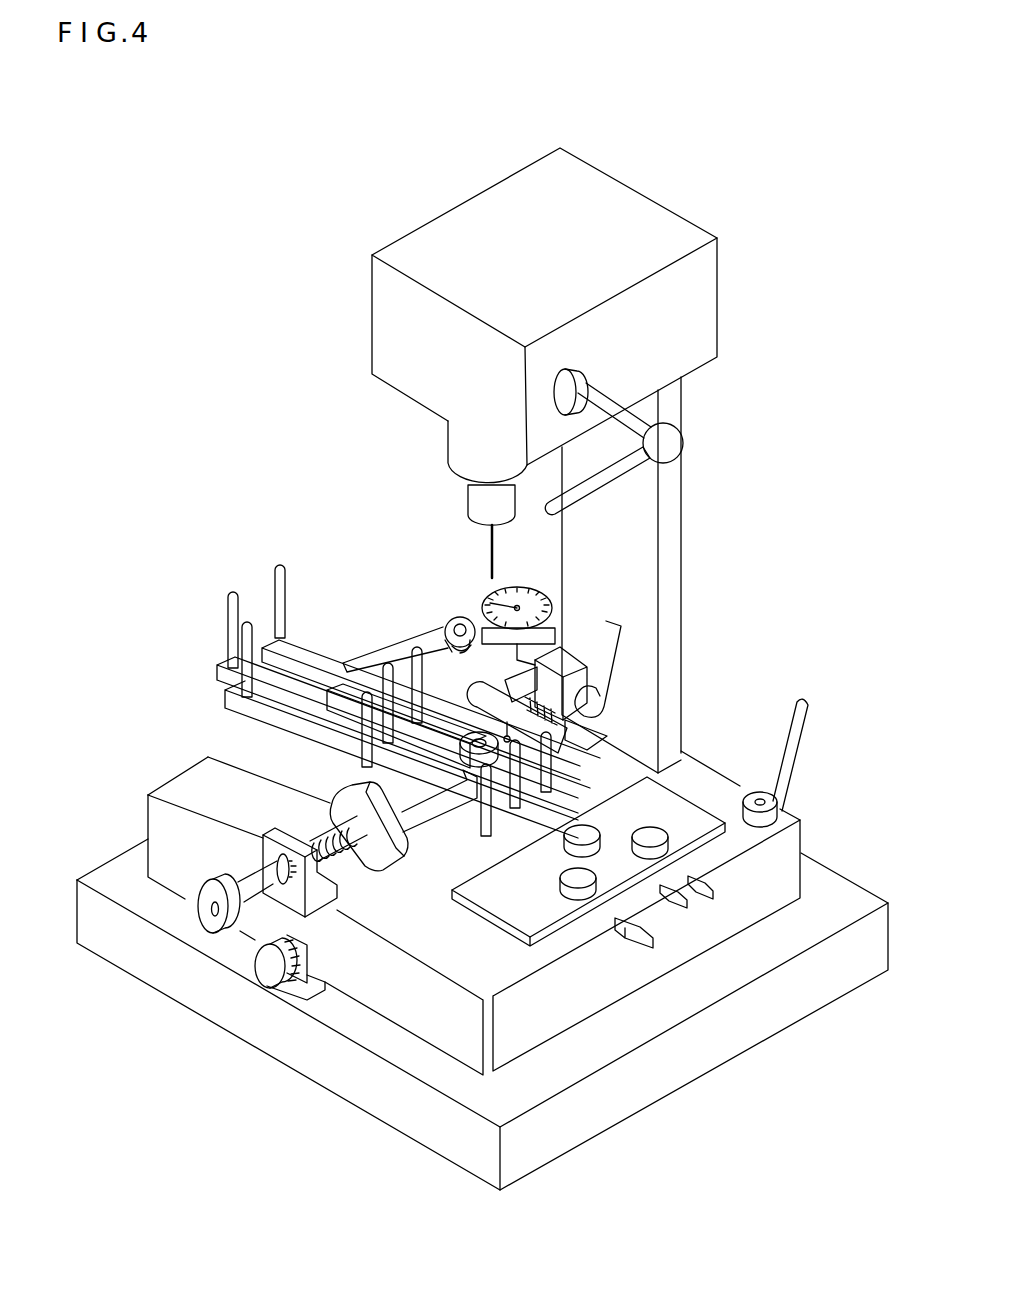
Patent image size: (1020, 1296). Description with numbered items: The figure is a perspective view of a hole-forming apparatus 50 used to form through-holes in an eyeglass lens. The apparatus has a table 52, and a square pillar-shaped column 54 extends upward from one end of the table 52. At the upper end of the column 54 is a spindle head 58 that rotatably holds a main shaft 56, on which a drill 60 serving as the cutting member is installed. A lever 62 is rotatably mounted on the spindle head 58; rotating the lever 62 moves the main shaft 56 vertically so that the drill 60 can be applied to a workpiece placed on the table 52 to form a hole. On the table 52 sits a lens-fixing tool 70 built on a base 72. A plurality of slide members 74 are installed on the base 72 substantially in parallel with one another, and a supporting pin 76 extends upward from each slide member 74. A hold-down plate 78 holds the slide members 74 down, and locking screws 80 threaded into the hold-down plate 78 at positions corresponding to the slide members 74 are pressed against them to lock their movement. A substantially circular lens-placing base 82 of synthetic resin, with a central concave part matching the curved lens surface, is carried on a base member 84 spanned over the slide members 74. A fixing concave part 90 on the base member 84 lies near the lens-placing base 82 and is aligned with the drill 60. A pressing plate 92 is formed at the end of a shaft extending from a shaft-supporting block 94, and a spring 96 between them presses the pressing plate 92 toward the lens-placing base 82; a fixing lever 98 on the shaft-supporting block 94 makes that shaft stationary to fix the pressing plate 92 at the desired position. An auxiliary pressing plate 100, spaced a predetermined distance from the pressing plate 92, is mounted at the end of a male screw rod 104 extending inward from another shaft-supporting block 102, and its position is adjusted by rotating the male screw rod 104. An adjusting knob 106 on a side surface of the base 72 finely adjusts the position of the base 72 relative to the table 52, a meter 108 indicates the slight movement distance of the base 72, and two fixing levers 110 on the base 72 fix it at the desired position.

The hole-forming apparatus 50 is at (283, 112).
The table 52 is at (680, 1063).
The column 54 is at (645, 518).
The main shaft 56 is at (485, 503).
The spindle head 58 is at (432, 242).
The drill 60 is at (489, 548).
The lever 62 is at (612, 476).
The lens-fixing tool 70 is at (806, 826).
The base 72 is at (407, 1003).
The slide members 74 is at (298, 648).
The supporting pin 76 is at (278, 578).
The hold-down plate 78 is at (697, 820).
The locking screws 80 is at (580, 877).
The lens-placing base 82 is at (476, 731).
The base member 84 is at (422, 808).
The fixing concave part 90 is at (507, 734).
The pressing plate 92 is at (448, 637).
The shaft-supporting block 94 is at (580, 650).
The spring 96 is at (577, 722).
The fixing lever 98 is at (623, 634).
The auxiliary pressing plate 100 is at (388, 850).
The shaft-supporting block 102 is at (262, 942).
The male screw rod 104 is at (206, 763).
The adjusting knob 106 is at (273, 970).
The meter 108 is at (488, 592).
The fixing levers 110 is at (378, 650).